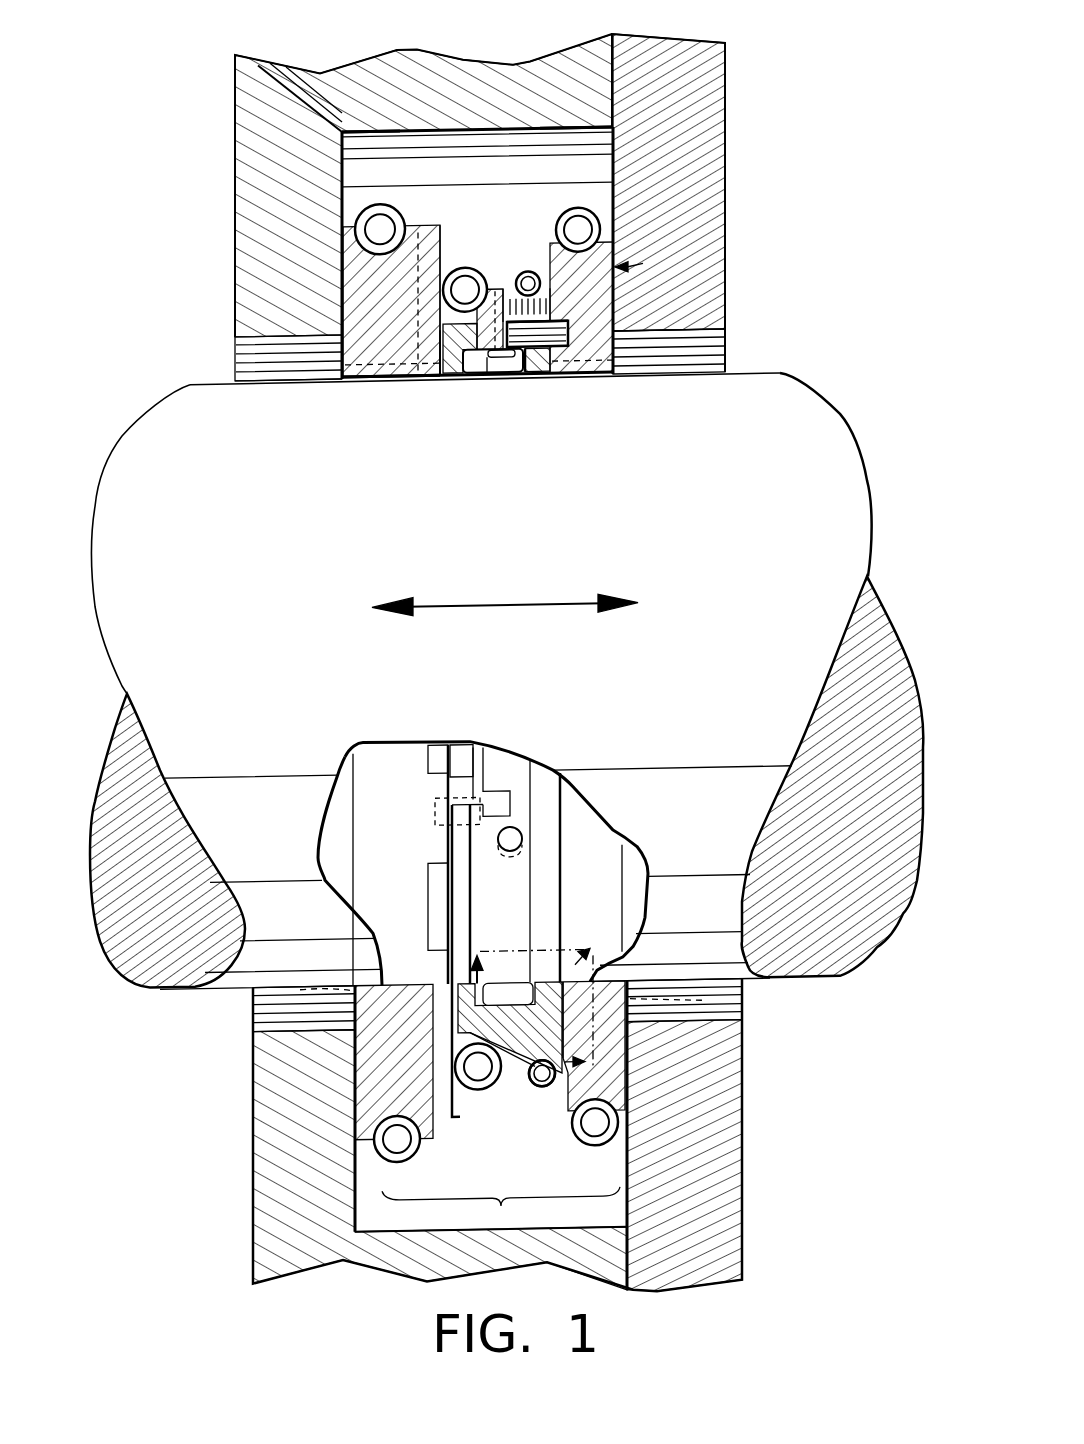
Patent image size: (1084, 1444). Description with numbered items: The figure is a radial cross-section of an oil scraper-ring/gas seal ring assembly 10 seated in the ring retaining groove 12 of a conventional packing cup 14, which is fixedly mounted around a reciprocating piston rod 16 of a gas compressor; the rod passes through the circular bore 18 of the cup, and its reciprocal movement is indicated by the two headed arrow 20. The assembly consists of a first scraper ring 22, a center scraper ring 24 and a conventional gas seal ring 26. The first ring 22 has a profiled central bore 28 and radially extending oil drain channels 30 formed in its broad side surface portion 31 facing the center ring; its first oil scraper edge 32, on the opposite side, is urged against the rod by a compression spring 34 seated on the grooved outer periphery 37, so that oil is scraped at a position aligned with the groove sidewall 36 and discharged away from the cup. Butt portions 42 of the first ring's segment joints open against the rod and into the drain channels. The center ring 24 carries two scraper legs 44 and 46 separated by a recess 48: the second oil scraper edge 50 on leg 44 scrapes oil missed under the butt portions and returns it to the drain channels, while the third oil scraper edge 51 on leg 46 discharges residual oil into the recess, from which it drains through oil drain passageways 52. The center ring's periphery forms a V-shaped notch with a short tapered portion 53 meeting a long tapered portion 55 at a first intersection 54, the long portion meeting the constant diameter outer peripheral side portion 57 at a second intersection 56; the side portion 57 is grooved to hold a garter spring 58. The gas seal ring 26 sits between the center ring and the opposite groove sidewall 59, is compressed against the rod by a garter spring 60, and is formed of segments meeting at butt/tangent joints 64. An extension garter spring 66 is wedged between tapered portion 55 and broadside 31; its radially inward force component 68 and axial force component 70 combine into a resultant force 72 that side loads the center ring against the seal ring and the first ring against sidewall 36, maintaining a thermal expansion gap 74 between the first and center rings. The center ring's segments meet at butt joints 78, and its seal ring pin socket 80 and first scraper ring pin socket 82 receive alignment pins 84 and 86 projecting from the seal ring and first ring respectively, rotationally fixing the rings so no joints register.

The oil scraper-ring/gas seal ring assembly 10 is at (490, 1106).
The ring retaining groove 12 is at (725, 104).
The packing cup 14 is at (725, 159).
The piston rod 16 is at (792, 437).
The circular bore 18 is at (618, 338).
The two headed arrow 20 is at (477, 604).
The first scraper ring 22 is at (328, 285).
The center scraper ring 24 is at (480, 400).
The gas seal ring 26 is at (725, 226).
The profiled central bore 28 is at (418, 378).
The oil drain channels 30 is at (428, 262).
The broad side surface portion 31 is at (457, 307).
The first oil scraper edge 32 is at (338, 380).
The garter or compression spring 34 is at (378, 210).
The groove sidewall 36 is at (343, 150).
The outer periphery 37 is at (430, 228).
The butt portions 42 is at (395, 380).
The oil scraper leg 44 is at (452, 940).
The oil scraper leg 46 is at (551, 983).
The circumferentially extending recess 48 is at (487, 364).
The second oil scraper edge 50 is at (427, 378).
The third oil scraper edge 51 is at (527, 337).
The oil drain passageways 52 is at (504, 360).
The short tapered portion 53 is at (462, 282).
The first intersection 54 is at (470, 1072).
The long tapered portion 55 is at (497, 1075).
The second intersection 56 is at (549, 1092).
The outer peripheral side portion 57 is at (526, 280).
The garter spring 58 is at (547, 1080).
The groove sidewall 59 is at (612, 150).
The garter spring 60 is at (570, 222).
The butt/tangent joints 64 is at (590, 382).
The extension type garter spring 66 is at (440, 296).
The radially inward force component 68 is at (432, 985).
The axially directed force component 70 is at (595, 1067).
The resultant force component 72 is at (705, 1005).
The thermal expansion gap 74 is at (370, 973).
The butt joint 78 is at (510, 984).
The seal ring pin socket 80 is at (532, 365).
The first scraper ring pin socket 82 is at (510, 800).
The rotational alignment pin 84 is at (570, 336).
The rotational alignment pin 86 is at (436, 810).